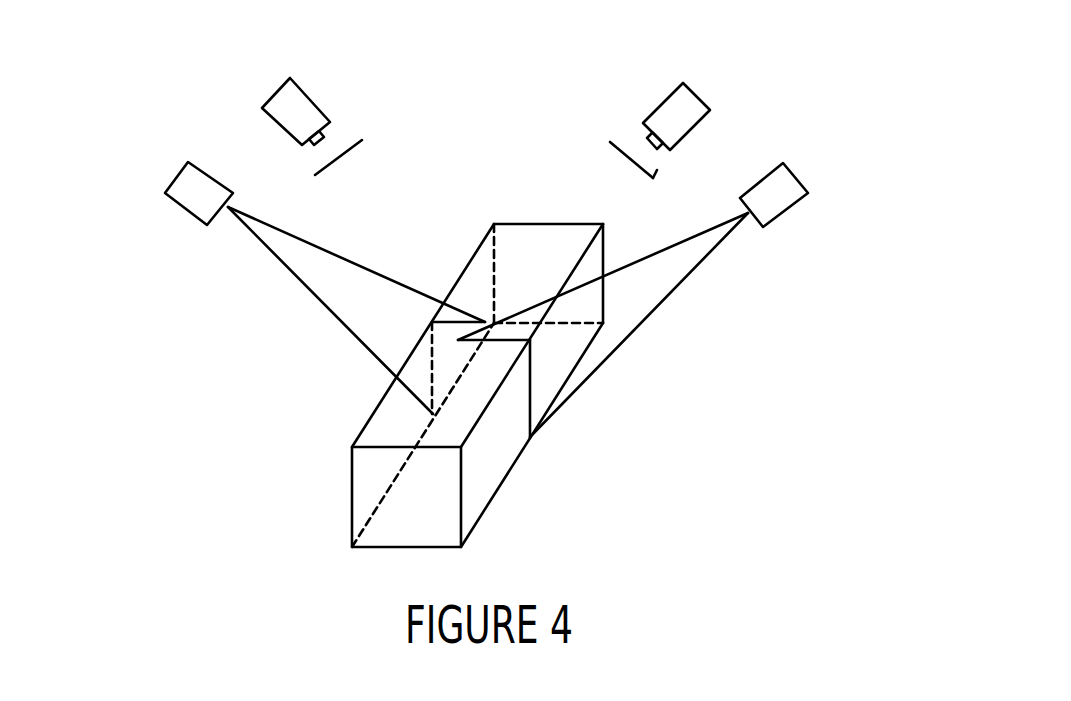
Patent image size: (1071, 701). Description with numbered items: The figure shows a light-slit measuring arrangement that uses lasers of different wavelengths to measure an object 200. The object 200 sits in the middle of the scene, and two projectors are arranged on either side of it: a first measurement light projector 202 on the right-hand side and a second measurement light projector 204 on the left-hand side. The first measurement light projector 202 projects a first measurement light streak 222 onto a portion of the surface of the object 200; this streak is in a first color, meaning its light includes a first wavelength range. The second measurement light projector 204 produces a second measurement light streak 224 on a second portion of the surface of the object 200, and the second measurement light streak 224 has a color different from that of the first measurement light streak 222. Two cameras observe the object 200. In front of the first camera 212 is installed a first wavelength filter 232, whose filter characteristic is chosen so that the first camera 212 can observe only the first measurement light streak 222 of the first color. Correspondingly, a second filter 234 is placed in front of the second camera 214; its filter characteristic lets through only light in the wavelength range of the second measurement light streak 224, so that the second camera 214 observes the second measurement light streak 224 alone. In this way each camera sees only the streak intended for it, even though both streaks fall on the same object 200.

The object to be measured 200 is at (461, 518).
The first measurement light projector 202 is at (808, 192).
The second measurement light projector 204 is at (165, 193).
The first camera 212 is at (704, 101).
The second camera 214 is at (270, 100).
The first measurement light streak 222 is at (533, 413).
The second measurement light streak 224 is at (458, 321).
The first wavelength filter 232 is at (655, 178).
The second filter 234 is at (363, 140).